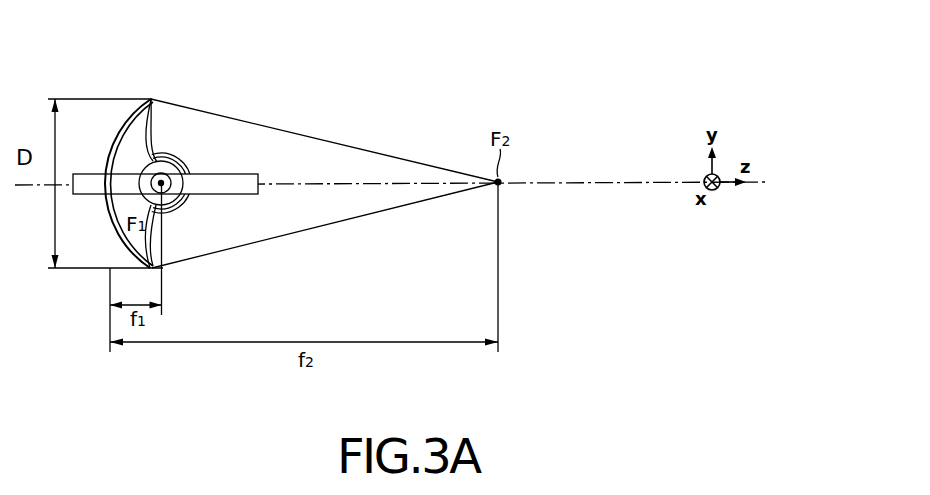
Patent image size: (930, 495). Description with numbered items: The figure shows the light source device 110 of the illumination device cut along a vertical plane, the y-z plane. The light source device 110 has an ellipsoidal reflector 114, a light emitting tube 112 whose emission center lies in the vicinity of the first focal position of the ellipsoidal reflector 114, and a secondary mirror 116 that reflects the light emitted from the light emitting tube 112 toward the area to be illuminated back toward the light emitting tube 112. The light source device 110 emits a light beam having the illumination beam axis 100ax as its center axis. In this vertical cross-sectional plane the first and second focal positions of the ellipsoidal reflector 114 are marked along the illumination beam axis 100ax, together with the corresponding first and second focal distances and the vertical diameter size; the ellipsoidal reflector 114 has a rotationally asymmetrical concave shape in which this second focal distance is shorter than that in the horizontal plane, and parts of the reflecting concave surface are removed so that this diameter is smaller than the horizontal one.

The light source device 110 is at (255, 50).
The light emitting tube 112 is at (154, 134).
The ellipsoidal reflector 114 is at (127, 113).
The secondary mirror 116 is at (186, 160).
The illumination beam axis 100ax is at (658, 183).